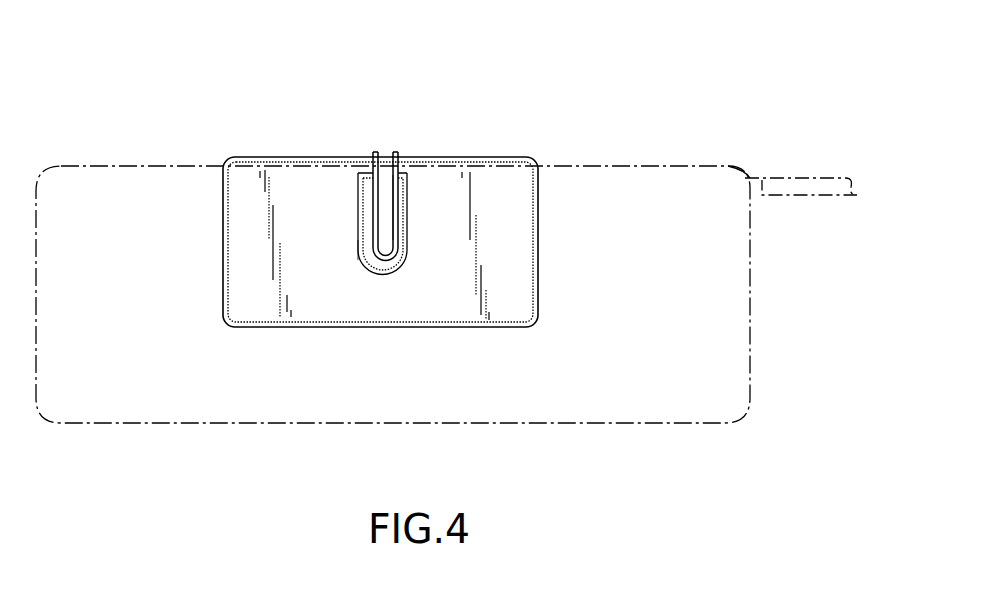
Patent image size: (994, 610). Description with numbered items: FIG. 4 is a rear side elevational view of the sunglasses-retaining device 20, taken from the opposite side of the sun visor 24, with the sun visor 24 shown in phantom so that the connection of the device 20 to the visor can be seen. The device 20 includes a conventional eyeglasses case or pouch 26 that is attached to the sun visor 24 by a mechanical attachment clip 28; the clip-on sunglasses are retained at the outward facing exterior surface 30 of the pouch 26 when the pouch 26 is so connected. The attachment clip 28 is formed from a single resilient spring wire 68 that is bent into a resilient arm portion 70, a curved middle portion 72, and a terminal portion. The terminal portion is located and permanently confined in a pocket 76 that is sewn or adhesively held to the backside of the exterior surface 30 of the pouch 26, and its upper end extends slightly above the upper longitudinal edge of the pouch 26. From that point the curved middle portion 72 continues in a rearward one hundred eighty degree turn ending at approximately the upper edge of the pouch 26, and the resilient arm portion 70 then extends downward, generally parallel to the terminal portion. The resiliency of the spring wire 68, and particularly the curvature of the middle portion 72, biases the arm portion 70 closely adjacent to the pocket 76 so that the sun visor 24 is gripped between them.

The device 20 is at (277, 147).
The sun visor 24 is at (720, 165).
The pouch 26 is at (522, 242).
The mechanical attachment clip 28 is at (396, 128).
The exterior surface 30 is at (420, 313).
The resilient spring wire 68 is at (400, 189).
The resilient arm portion 70 is at (361, 254).
The curved middle portion 72 is at (394, 149).
The pocket 76 is at (402, 213).